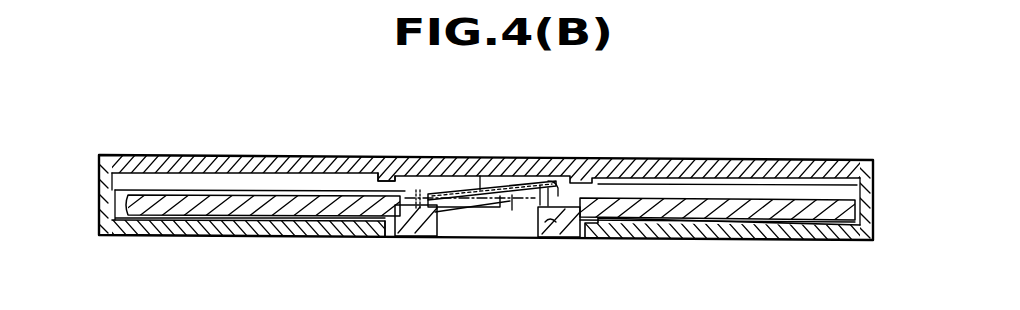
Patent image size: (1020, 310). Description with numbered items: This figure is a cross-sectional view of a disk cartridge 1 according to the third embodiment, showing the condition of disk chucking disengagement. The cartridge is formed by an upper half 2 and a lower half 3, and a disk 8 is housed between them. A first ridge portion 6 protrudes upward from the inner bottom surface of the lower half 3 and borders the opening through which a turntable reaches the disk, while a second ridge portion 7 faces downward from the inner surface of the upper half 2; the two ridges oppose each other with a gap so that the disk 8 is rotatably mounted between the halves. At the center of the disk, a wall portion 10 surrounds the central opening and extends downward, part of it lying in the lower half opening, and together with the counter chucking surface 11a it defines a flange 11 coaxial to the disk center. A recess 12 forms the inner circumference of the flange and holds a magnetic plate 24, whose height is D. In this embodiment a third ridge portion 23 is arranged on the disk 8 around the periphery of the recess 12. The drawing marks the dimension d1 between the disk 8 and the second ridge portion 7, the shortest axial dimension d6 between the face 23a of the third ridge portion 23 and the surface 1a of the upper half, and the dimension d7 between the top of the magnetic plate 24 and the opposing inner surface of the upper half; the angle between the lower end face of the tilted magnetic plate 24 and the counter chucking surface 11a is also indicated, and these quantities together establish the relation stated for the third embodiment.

The disk cartridge 1 is at (882, 168).
The upper surface of the upper half 1a is at (492, 157).
The upper half 2 is at (833, 160).
The lower half 3 is at (825, 241).
The first ridge portion 6 is at (385, 237).
The second ridge portion 7 is at (370, 157).
The disk 8 is at (716, 186).
The wall portion 10 is at (418, 238).
The flange 11 is at (567, 238).
The counter chucking surface 11a is at (550, 236).
The recess 12 is at (419, 184).
The third ridge portion 23 is at (388, 157).
The face of the third ridge portion 23a is at (580, 157).
The magnetic plate 24 is at (522, 157).
The dimension between the disk and the second ridge portion d1 is at (902, 152).
The shortest axial dimension between the third ridge face and the upper half surface d6 is at (78, 148).
The dimension between the top of the magnetic plate and the upper half inner surface d7 is at (452, 157).
The height of the magnetic plate D is at (513, 222).